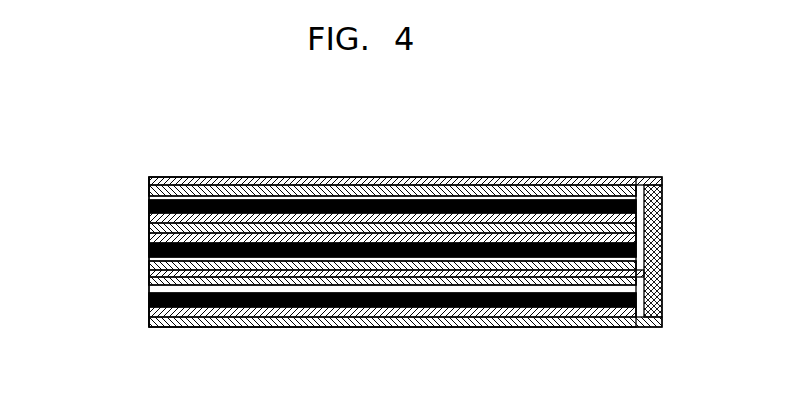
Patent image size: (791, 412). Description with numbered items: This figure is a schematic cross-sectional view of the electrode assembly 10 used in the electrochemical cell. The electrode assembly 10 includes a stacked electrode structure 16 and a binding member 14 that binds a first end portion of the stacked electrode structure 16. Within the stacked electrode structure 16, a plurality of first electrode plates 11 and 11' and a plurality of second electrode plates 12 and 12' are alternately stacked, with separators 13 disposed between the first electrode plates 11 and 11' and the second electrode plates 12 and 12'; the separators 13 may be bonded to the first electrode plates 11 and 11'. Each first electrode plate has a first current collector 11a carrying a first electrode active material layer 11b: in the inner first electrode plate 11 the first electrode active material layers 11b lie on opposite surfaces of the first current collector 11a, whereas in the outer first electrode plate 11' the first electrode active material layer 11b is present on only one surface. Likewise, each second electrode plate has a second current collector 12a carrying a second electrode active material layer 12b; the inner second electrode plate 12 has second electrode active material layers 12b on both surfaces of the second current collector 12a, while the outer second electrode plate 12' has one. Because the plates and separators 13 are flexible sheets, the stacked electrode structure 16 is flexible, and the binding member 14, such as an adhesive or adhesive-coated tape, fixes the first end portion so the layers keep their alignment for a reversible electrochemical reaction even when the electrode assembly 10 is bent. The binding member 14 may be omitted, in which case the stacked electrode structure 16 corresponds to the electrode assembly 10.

The electrode assembly 10 is at (664, 148).
The stacked electrode structure 16 is at (35, 142).
The binding member 14 is at (663, 205).
The second electrode plate 12' is at (338, 161).
The second electrode plate 12 is at (338, 286).
The second current collector 12a is at (149, 180).
The second electrode active material layer 12b is at (149, 189).
The first electrode plate 11 is at (338, 226).
The first electrode plate 11' is at (338, 332).
The first current collector 11a is at (149, 228).
The first electrode active material layer 11b is at (149, 217).
The separator 13 is at (149, 203).